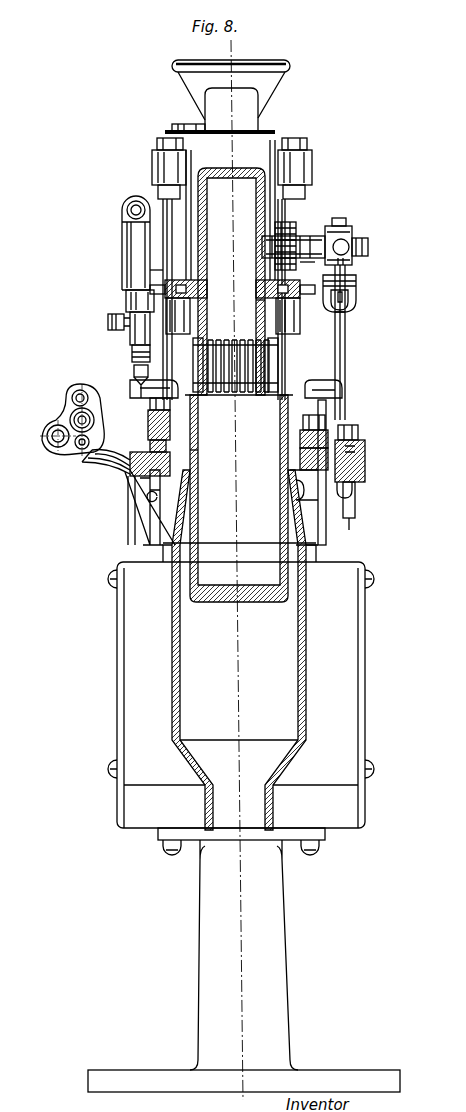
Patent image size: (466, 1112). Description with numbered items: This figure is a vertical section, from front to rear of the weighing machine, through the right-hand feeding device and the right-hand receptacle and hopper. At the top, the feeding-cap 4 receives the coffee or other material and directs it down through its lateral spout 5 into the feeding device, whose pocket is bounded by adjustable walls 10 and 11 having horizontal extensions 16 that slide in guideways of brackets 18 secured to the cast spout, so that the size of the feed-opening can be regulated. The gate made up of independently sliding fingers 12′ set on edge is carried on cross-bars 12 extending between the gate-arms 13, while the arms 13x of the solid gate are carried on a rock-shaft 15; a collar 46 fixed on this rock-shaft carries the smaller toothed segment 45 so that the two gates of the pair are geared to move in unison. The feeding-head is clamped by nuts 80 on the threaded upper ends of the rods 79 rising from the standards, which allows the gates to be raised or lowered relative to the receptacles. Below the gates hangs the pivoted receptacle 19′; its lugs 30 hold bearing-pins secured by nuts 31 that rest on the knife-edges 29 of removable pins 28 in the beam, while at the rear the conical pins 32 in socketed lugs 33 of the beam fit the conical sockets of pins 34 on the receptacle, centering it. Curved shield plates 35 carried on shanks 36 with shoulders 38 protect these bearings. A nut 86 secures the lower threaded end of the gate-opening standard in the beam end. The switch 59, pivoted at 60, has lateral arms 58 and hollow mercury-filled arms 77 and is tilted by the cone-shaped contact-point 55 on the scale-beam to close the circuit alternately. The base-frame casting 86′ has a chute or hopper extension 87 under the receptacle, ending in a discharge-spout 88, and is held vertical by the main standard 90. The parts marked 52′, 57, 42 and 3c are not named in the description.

The feeding-cap 4 is at (240, 86).
The lateral spout 5 is at (231, 109).
The plate 52′ is at (258, 133).
The nut 80 is at (305, 145).
The rod 79 is at (163, 200).
The gate-arm 13 is at (272, 182).
The arm of solid feeding-gate 13x is at (272, 158).
The adjustable wall 10 is at (231, 281).
The adjustable wall 11 is at (257, 298).
The horizontal extension 16 is at (200, 290).
The cross-bar 12 is at (290, 342).
The sliding finger 12′ is at (236, 348).
The lug 30 is at (199, 440).
The receptacle 19′ is at (232, 494).
The knife-edge 29 is at (188, 444).
The lateral extension (chute or hopper) 87 is at (239, 650).
The base-frame casting 86′ is at (241, 695).
The discharge-spout 88 is at (239, 803).
The main standard 90 is at (190, 1068).
The hollow arm 77 is at (122, 208).
The switch 59 is at (122, 246).
The bracket 18 is at (163, 278).
The lateral arm of switch 58 is at (126, 300).
The pivot of switch 60 is at (108, 322).
The connector 57 is at (132, 352).
The contact-point 55 is at (134, 372).
The shield plate 35 is at (130, 386).
The nut 31 is at (150, 405).
The shank 36 is at (148, 432).
The removable pin 28 is at (130, 470).
The shoulder 38 is at (92, 470).
The perforated plate 42 is at (70, 458).
The bracket 3c is at (175, 460).
The smaller toothed segment 45 is at (296, 238).
The rock-shaft 15 is at (360, 250).
The collar 46 is at (316, 240).
The pin with conical socket 34 is at (328, 426).
The conical pin 32 is at (300, 440).
The socketed lug 33 is at (300, 462).
The nut 86 is at (355, 494).